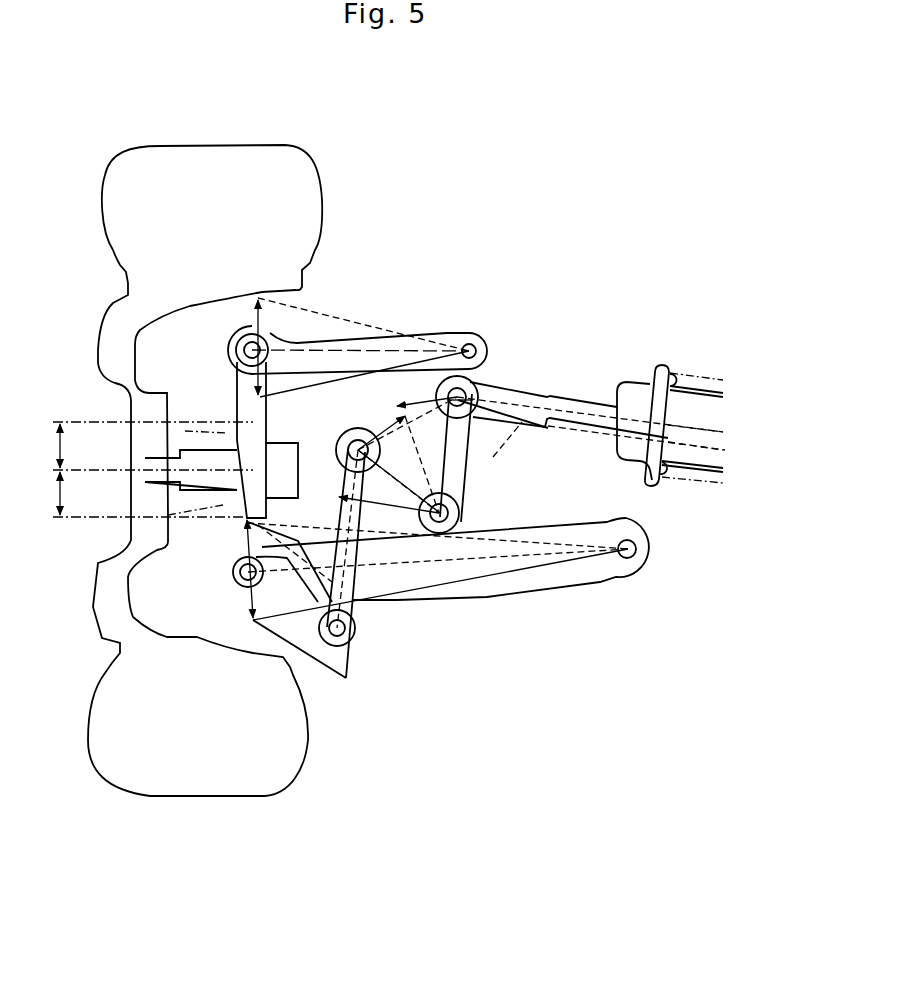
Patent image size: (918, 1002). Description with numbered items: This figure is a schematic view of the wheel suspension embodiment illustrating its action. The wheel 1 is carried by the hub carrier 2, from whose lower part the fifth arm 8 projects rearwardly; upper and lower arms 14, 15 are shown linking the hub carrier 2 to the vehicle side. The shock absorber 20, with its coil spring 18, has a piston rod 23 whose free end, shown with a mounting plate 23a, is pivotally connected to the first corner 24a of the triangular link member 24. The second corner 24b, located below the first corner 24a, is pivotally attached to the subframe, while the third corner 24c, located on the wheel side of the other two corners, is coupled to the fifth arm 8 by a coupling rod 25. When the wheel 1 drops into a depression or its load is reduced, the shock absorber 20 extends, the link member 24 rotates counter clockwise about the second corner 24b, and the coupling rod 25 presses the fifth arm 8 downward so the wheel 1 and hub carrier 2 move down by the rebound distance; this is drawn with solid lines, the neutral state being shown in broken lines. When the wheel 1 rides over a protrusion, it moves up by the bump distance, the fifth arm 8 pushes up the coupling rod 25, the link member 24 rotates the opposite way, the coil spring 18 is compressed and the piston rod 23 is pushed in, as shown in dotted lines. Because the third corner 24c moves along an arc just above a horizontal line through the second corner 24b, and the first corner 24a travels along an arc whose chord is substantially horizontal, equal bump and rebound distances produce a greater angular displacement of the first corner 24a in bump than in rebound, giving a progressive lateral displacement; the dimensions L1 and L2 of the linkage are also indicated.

The wheel 1 is at (322, 187).
The hub carrier 2 is at (237, 398).
The fifth arm 8 is at (297, 582).
The upper control arm 14 is at (387, 343).
The lower control arm 15 is at (503, 593).
The coil spring 18 is at (683, 375).
The shock absorber 20 is at (640, 362).
The piston rod 23 is at (582, 403).
The tie rod mounting plate 23a is at (660, 372).
The triangular link member 24 is at (470, 458).
The first corner 24a is at (477, 383).
The second corner 24b is at (463, 515).
The third corner 24c is at (347, 437).
The coupling rod 25 is at (358, 585).
The link length L1 is at (448, 475).
The offset distance L2 is at (383, 508).